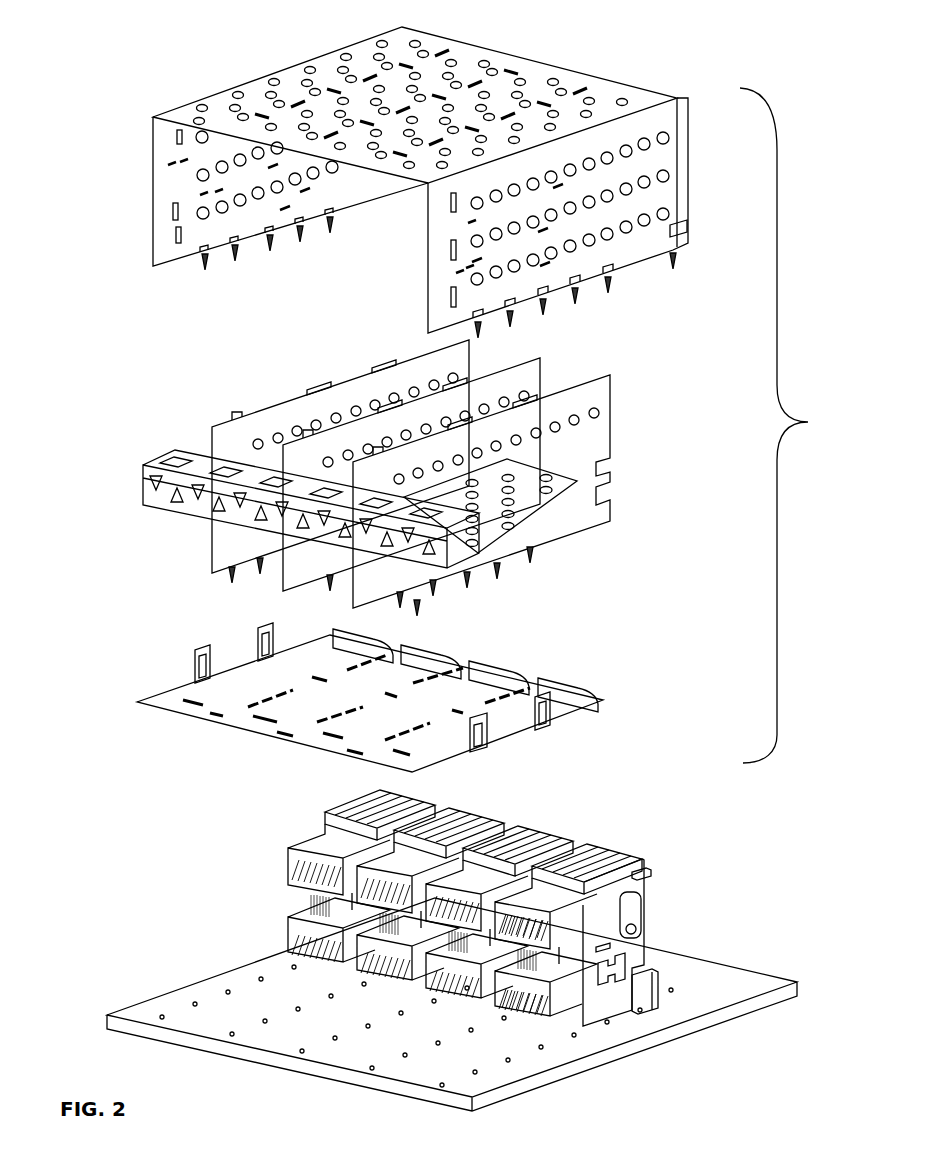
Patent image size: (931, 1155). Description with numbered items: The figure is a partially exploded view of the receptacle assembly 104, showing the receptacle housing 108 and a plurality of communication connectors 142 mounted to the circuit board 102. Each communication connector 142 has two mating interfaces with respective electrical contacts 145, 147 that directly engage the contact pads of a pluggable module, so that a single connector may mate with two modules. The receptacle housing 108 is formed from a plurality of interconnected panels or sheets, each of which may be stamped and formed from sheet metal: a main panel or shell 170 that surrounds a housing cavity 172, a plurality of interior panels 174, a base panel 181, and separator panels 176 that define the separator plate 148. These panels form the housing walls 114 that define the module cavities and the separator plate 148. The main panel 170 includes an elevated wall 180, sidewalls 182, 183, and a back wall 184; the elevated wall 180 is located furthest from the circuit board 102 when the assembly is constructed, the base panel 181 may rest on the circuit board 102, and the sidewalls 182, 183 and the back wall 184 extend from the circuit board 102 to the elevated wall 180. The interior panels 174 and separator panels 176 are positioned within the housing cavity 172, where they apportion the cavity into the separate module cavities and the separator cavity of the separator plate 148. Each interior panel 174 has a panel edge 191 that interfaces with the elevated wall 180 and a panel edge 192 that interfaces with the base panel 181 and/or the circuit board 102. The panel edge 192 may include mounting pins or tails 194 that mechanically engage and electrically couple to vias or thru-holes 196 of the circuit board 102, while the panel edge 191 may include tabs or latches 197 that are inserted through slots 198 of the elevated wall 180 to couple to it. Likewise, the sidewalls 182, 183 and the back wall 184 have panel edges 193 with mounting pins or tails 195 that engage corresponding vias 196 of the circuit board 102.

The circuit board 102 is at (740, 980).
The receptacle assembly 104 is at (205, 54).
The receptacle housing 108 is at (808, 422).
The housing walls 114 is at (663, 195).
The communication connector 142 is at (666, 869).
The electrical contacts 145 is at (535, 1002).
The electrical contacts 147 is at (535, 868).
The separator plate 148 is at (508, 505).
The main panel 170 is at (656, 47).
The housing cavity 172 is at (262, 291).
The interior panels 174 is at (300, 410).
The separator panels 176 is at (180, 455).
The elevated wall 180 is at (535, 62).
The base panel 181 is at (160, 700).
The sidewall 182 is at (358, 188).
The sidewall 183 is at (628, 246).
The back wall 184 is at (693, 155).
The panel edge 191 is at (550, 388).
The panel edge 192 is at (470, 562).
The panel edges 193 is at (315, 215).
The mounting pins 194 is at (528, 547).
The mounting pins 195 is at (200, 265).
The vias 196 is at (202, 1000).
The tabs 197 is at (373, 380).
The slots 198 is at (418, 100).